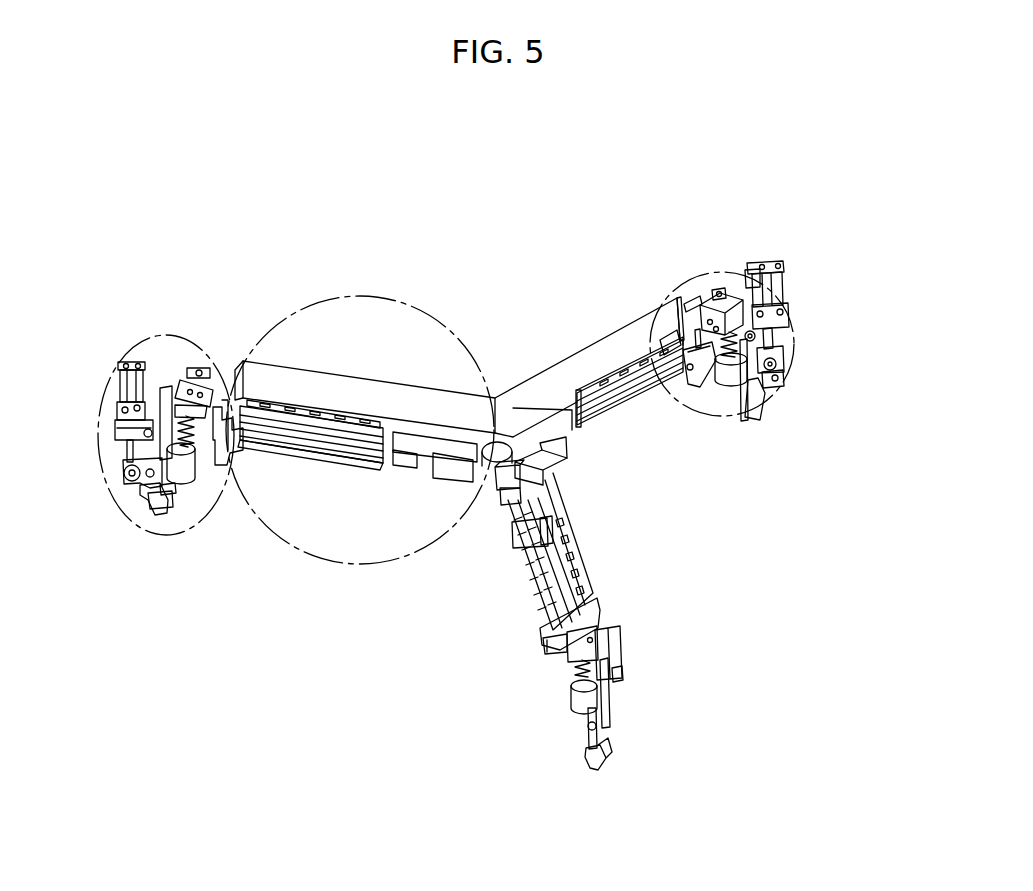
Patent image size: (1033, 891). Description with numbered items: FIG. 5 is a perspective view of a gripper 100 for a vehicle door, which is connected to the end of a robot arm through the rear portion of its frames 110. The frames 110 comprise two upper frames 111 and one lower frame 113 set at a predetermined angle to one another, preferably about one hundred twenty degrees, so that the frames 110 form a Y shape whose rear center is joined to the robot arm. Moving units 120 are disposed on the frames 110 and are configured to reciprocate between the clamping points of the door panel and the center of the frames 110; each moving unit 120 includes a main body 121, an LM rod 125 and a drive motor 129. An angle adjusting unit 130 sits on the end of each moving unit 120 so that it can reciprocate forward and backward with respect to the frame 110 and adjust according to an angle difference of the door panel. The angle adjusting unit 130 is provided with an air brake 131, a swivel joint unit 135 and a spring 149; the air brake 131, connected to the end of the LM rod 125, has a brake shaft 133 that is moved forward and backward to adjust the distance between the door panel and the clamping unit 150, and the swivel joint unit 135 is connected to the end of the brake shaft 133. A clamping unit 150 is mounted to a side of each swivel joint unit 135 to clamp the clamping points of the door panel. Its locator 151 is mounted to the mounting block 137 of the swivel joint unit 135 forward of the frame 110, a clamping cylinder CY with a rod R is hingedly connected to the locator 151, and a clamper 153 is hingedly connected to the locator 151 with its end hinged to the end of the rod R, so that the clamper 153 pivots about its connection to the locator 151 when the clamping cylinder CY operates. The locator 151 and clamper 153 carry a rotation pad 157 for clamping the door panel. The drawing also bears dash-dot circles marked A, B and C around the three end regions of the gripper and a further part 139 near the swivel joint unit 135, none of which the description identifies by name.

The gripper 100 is at (486, 150).
The frame 110 is at (400, 375).
The upper frame 111 is at (333, 390).
The lower frame 113 is at (588, 558).
The moving unit 120 is at (303, 467).
The main body 121 is at (330, 455).
The LM rod 125 is at (672, 334).
The drive motor 129 is at (440, 447).
The angle adjusting unit 130 is at (199, 355).
The air brake 131 is at (207, 370).
The brake shaft 133 is at (188, 362).
The swivel joint unit 135 is at (721, 403).
The mounting block 137 is at (184, 470).
The connecting bracket 139 is at (205, 455).
The spring 149 is at (230, 372).
The clamping unit 150 is at (774, 254).
The locator 151 is at (205, 500).
The clamper 153 is at (160, 507).
The rotation pad 157 is at (180, 495).
The region A is at (356, 296).
The region B is at (718, 270).
The region C is at (122, 335).
The clamping cylinder CY is at (126, 375).
The rod R is at (150, 510).